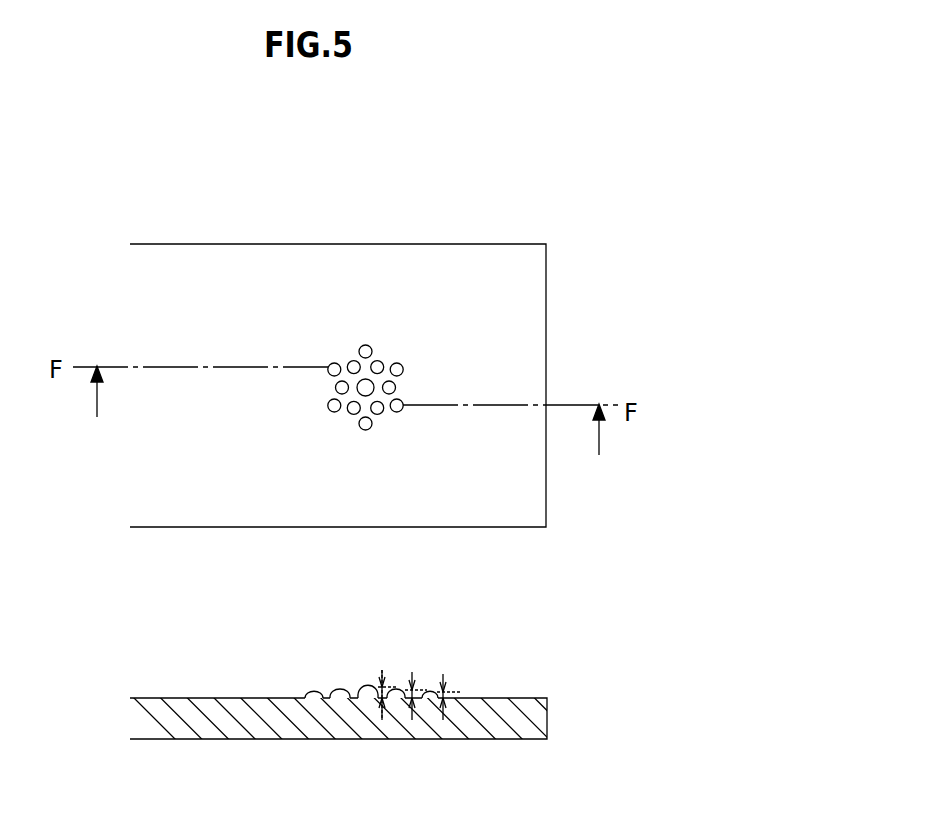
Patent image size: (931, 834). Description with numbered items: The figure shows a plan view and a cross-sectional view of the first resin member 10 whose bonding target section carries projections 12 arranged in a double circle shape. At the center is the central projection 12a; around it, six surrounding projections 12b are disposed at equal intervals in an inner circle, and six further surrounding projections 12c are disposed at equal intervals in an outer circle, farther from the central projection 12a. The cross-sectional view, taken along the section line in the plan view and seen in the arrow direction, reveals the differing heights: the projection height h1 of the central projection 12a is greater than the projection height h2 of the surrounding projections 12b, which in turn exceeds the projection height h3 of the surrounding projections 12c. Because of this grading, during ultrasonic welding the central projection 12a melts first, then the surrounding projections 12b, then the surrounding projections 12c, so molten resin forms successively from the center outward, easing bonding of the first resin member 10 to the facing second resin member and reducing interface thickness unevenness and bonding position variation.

The first resin member 10 is at (515, 248).
The projections 12 is at (420, 398).
The central projection 12a is at (366, 379).
The surrounding projections 12b is at (383, 362).
The surrounding projections 12c is at (361, 347).
The projection height h1 is at (382, 681).
The projection height h2 is at (413, 683).
The projection height h3 is at (446, 684).